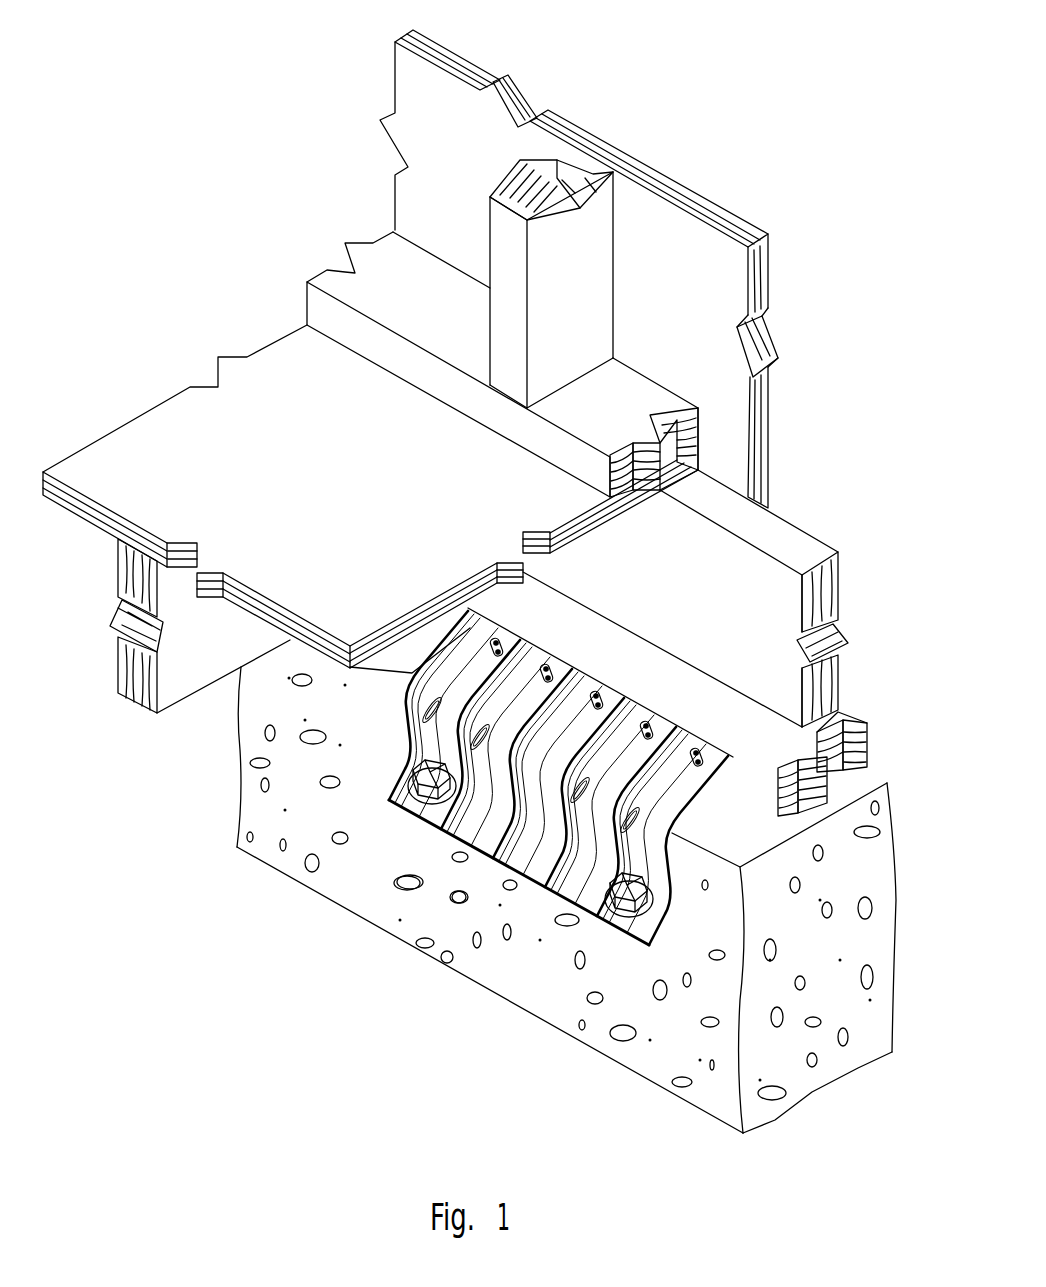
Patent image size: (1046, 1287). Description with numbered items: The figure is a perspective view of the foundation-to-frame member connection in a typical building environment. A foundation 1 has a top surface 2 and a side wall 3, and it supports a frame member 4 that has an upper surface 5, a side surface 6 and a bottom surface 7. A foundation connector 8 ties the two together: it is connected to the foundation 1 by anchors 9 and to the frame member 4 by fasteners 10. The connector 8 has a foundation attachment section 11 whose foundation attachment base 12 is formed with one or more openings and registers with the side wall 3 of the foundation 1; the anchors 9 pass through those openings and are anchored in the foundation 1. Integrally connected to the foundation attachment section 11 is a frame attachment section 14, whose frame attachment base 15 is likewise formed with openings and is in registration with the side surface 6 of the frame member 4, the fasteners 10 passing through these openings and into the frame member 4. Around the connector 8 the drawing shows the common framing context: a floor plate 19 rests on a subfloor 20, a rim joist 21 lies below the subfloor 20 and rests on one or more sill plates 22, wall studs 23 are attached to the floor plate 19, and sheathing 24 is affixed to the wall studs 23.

The foundation 1 is at (892, 850).
The top surface 2 is at (873, 767).
The side wall 3 is at (702, 1095).
The frame member 4 is at (860, 704).
The upper surface 5 is at (847, 717).
The side surface 6 is at (763, 790).
The bottom surface 7 is at (794, 805).
The foundation connector 8 is at (535, 821).
The anchors 9 is at (422, 808).
The fasteners 10 is at (594, 680).
The foundation attachment section 11 is at (403, 763).
The foundation attachment base 12 is at (410, 760).
The frame attachment section 14 is at (445, 645).
The frame attachment base 15 is at (470, 627).
The floor plate 19 is at (698, 427).
The subfloor 20 is at (160, 403).
The rim joist 21 is at (843, 575).
The sill plates 22 is at (867, 730).
The wall studs 23 is at (617, 283).
The sheathing 24 is at (768, 294).